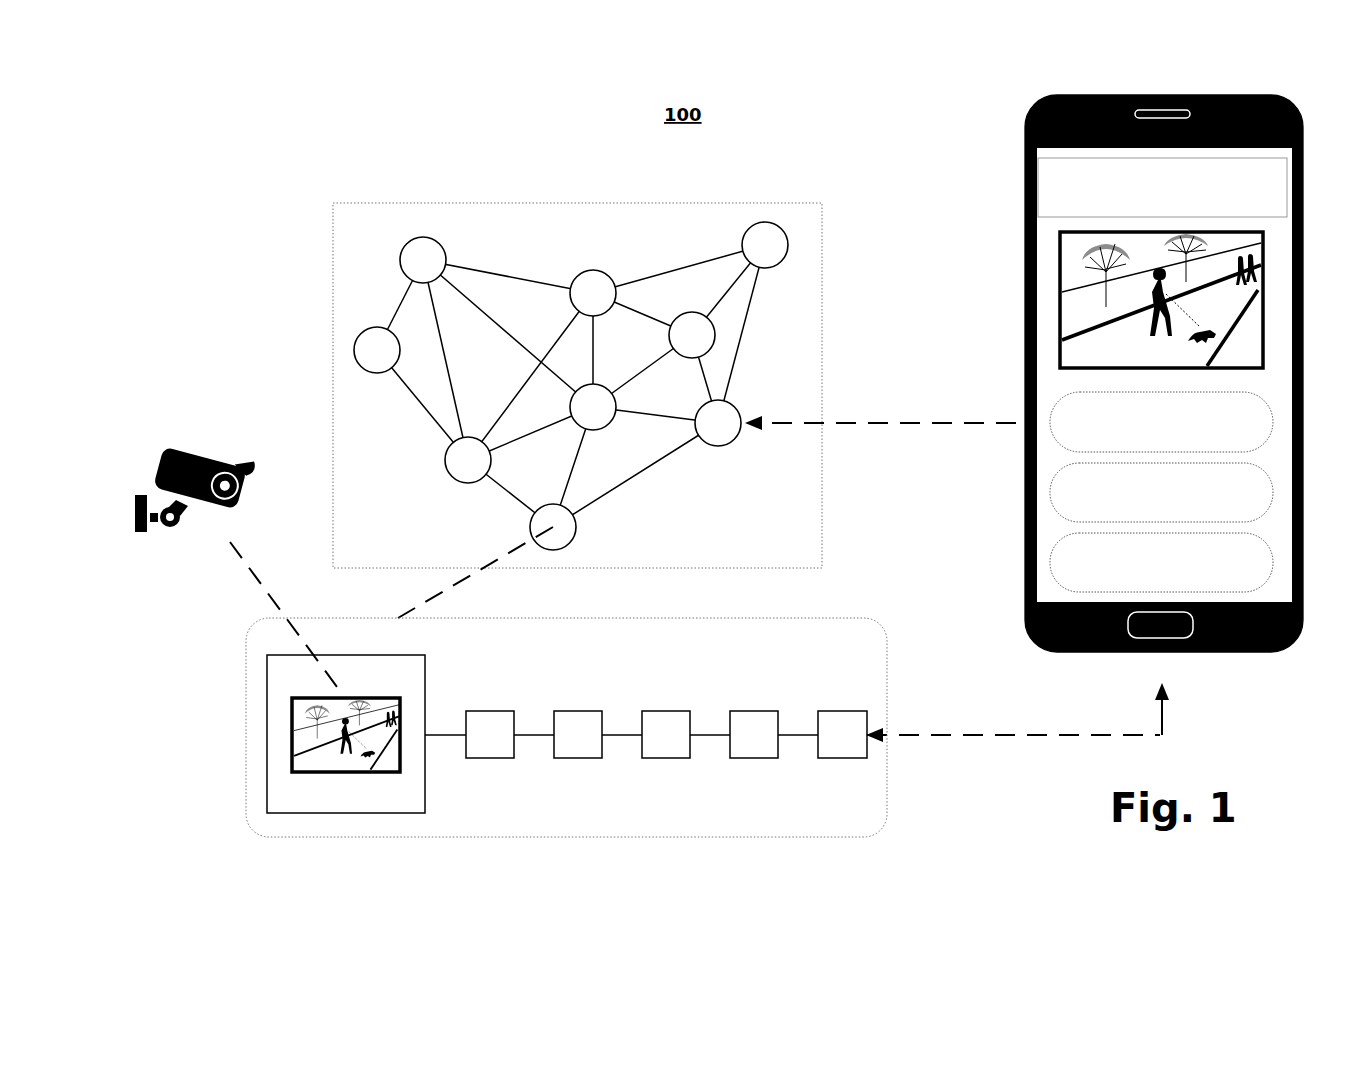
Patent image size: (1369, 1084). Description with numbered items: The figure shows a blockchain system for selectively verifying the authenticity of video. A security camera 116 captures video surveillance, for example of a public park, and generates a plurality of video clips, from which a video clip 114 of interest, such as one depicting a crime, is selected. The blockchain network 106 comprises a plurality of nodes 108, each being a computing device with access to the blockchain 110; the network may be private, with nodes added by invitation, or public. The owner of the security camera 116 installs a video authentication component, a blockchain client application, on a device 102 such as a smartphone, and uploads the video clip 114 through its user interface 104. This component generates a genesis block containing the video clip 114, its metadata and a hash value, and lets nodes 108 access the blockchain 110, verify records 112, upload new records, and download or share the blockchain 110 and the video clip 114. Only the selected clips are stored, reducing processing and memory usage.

The device 102 is at (1023, 140).
The user interface 104 is at (1060, 357).
The blockchain network 106 is at (333, 327).
The node 108 is at (414, 248).
The blockchain 110 is at (247, 747).
The record 112 is at (273, 670).
The video clip 114 is at (345, 772).
The security camera 116 is at (167, 445).